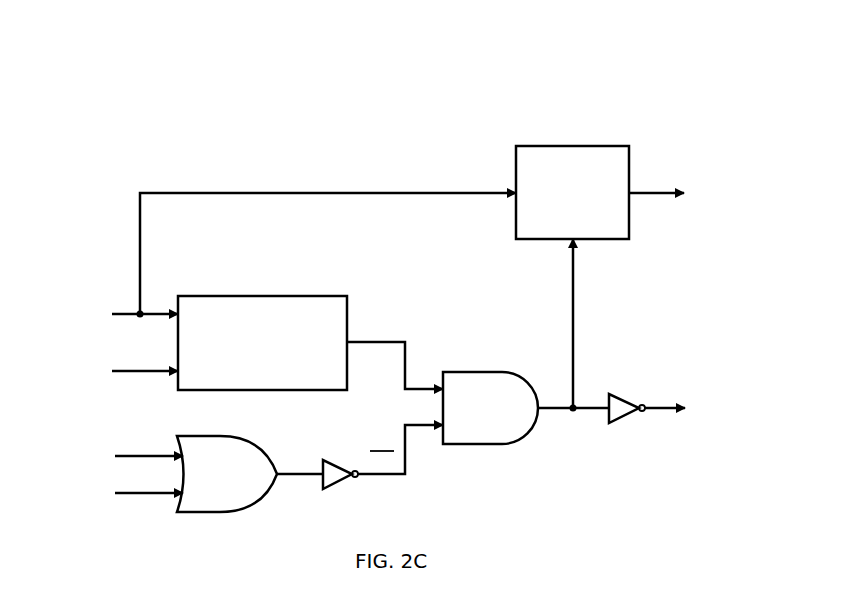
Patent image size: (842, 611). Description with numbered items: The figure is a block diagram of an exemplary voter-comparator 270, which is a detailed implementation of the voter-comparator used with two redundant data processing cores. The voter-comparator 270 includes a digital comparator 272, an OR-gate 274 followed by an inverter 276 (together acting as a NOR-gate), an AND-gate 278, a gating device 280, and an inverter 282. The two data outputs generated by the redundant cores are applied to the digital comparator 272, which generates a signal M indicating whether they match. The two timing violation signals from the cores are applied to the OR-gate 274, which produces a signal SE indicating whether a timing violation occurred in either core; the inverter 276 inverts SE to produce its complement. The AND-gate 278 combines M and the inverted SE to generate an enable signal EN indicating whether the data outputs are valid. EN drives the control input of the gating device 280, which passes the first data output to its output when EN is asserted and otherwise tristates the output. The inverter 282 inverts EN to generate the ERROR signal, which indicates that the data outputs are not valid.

The voter-comparator 270 is at (331, 103).
The digital comparator 272 is at (262, 296).
The OR-gate 274 is at (248, 446).
The inverter 276 is at (330, 460).
The AND-gate 278 is at (462, 372).
The gating device 280 is at (572, 146).
The inverter 282 is at (623, 394).